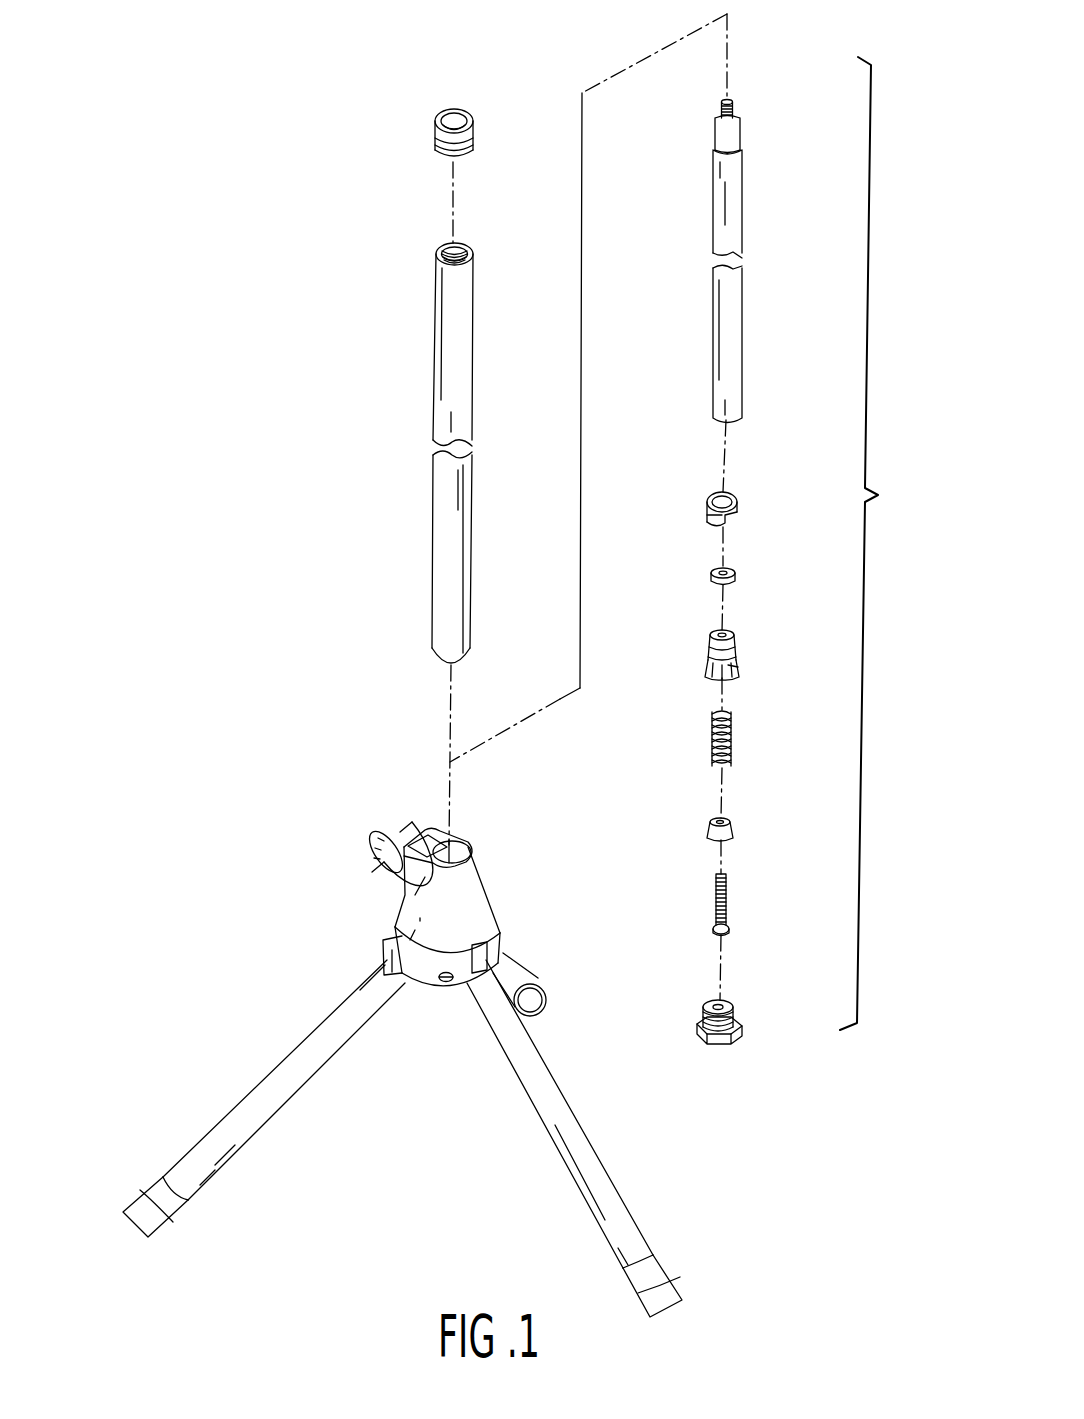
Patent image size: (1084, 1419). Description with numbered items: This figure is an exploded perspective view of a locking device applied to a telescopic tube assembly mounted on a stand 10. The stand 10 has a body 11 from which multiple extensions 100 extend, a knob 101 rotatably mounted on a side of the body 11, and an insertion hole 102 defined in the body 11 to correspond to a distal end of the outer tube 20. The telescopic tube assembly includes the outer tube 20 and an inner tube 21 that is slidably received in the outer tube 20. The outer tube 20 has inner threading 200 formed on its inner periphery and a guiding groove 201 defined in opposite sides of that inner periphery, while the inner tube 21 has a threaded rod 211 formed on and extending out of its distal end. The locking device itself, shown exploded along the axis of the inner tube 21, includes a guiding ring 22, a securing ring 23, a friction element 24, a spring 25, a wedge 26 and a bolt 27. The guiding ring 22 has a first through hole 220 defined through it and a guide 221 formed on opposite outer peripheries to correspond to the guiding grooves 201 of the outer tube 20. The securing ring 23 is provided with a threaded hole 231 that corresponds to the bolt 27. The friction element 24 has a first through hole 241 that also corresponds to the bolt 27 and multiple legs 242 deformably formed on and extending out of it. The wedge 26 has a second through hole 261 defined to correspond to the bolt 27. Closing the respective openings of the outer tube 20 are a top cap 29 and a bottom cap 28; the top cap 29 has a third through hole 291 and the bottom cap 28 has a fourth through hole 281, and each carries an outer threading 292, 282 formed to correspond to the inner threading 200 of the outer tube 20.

The stand 10 is at (335, 960).
The body 11 is at (479, 899).
The extensions 100 is at (330, 1052).
The knob 101 is at (383, 840).
The insertion hole 102 is at (465, 846).
The outer tube 20 is at (451, 443).
The inner threading 200 is at (436, 254).
The guiding groove 201 is at (466, 247).
The inner tube 21 is at (763, 259).
The threaded rod 211 is at (735, 108).
The guiding ring 22 is at (725, 490).
The first through hole 220 is at (722, 503).
The guide 221 is at (677, 530).
The securing ring 23 is at (721, 573).
The threaded hole 231 is at (684, 570).
The friction element 24 is at (734, 660).
The first through hole 241 is at (718, 635).
The legs 242 is at (738, 668).
The spring 25 is at (731, 738).
The wedge 26 is at (715, 823).
The second through hole 261 is at (683, 820).
The bolt 27 is at (728, 903).
The bottom cap 28 is at (724, 1026).
The fourth through hole 281 is at (715, 1005).
The outer threading 282 is at (738, 1021).
The top cap 29 is at (470, 112).
The third through hole 291 is at (448, 112).
The outer threading 292 is at (473, 147).